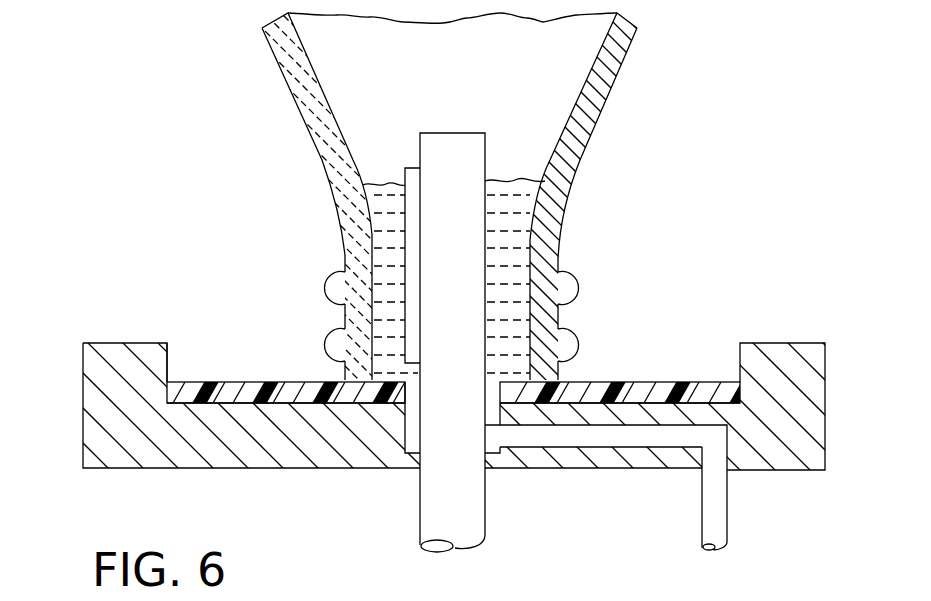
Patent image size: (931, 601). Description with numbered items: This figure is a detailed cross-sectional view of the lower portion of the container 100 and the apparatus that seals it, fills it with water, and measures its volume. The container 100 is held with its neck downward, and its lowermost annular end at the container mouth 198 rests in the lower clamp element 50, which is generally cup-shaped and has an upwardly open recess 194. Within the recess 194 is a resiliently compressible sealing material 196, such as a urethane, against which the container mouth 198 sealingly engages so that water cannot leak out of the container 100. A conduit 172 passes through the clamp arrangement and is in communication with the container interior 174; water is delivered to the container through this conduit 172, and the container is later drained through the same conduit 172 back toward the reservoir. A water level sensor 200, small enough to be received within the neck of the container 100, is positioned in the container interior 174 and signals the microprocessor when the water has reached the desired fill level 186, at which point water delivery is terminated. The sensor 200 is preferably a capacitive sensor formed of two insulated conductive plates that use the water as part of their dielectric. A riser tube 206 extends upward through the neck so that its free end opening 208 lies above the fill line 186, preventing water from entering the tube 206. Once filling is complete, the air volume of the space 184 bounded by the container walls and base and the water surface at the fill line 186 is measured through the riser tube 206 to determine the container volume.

The lower clamp element 50 is at (76, 382).
The container 100 is at (604, 125).
The conduit 172 is at (723, 517).
The container interior 174 is at (518, 265).
The space 184 is at (531, 81).
The fill level 186 is at (380, 193).
The recess 194 is at (200, 363).
The sealing material 196 is at (300, 380).
The container mouth 198 is at (554, 352).
The water level sensor 200 is at (410, 292).
The riser tube 206 is at (418, 528).
The free end opening 208 is at (422, 132).